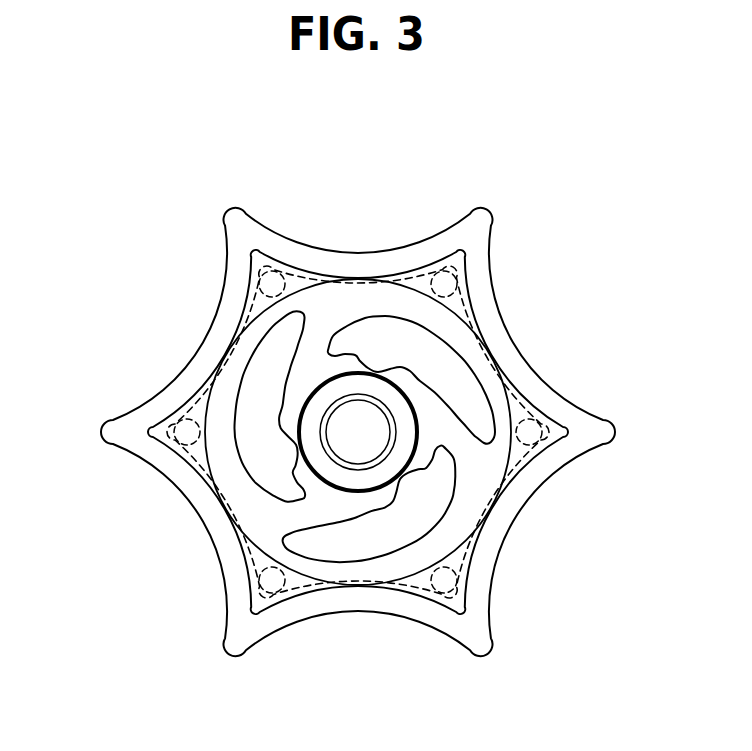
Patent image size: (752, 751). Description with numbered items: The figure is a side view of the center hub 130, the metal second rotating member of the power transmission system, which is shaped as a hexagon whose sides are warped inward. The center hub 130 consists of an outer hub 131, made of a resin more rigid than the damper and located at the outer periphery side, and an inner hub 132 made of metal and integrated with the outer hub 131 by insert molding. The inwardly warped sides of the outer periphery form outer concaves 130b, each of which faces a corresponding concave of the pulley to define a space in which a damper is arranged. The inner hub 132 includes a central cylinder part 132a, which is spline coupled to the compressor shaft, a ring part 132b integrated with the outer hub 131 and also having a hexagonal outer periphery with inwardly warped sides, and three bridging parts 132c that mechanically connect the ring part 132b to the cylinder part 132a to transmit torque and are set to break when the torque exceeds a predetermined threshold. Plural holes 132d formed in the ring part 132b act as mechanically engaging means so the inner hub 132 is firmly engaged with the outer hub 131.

The center hub 130 is at (370, 438).
The outer concave 130b is at (382, 250).
The outer hub 131 is at (449, 292).
The inner hub 132 is at (363, 423).
The cylinder part 132a is at (405, 418).
The ring part 132b is at (243, 297).
The bridging part 132c is at (322, 348).
The hole 132d is at (274, 270).